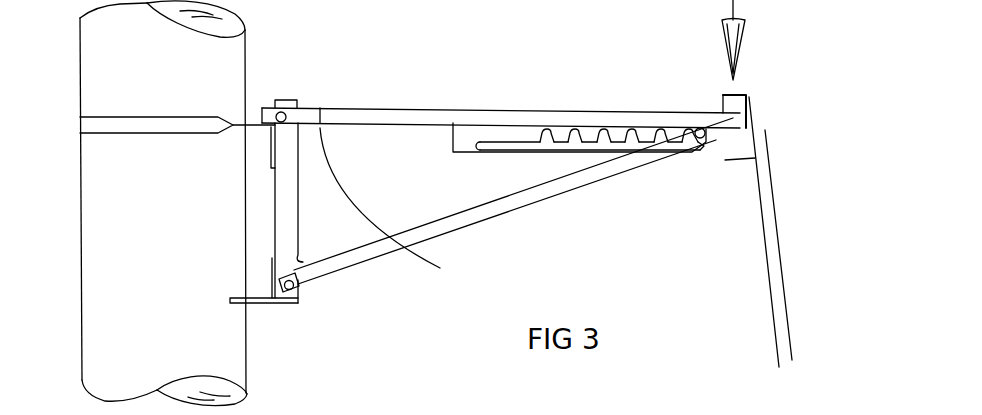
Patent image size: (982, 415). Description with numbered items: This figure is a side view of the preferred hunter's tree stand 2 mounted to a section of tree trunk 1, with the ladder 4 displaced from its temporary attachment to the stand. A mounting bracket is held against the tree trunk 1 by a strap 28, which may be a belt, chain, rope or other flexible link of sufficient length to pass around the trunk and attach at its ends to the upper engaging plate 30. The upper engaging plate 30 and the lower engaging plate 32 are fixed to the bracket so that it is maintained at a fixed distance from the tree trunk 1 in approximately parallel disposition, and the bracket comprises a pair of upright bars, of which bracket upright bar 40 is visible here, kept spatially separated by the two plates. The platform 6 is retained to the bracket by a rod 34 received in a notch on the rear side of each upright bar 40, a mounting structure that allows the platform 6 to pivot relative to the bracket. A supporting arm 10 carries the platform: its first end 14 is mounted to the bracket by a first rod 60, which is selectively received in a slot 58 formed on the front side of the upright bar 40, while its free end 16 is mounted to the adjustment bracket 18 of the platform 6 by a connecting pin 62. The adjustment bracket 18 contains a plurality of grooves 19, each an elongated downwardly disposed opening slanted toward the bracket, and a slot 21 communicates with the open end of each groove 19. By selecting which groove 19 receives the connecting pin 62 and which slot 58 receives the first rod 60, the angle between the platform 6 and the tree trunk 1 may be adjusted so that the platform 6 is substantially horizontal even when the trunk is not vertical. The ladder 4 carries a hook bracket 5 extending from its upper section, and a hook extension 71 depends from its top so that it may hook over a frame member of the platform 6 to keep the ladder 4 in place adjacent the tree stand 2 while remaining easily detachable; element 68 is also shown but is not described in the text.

The tree trunk 1 is at (96, 303).
The tree stand 2 is at (498, 105).
The ladder 4 is at (777, 203).
The hook bracket 5 is at (748, 108).
The platform 6 is at (383, 108).
The supporting arm 10 is at (508, 212).
The first end 14 is at (316, 279).
The free end 16 is at (662, 152).
The adjustment bracket 18 is at (677, 152).
The grooves 19 is at (633, 152).
The slot 21 is at (500, 148).
The strap 28 is at (80, 128).
The upper engaging plate 30 is at (248, 123).
The lower engaging plate 32 is at (253, 305).
The rod 34 is at (281, 114).
The bracket upright bar 40 is at (298, 304).
The slot 58 is at (330, 280).
The first rod 60 is at (302, 290).
The connecting pin 62 is at (700, 140).
The cable 68 is at (392, 213).
The hook extension 71 is at (750, 128).